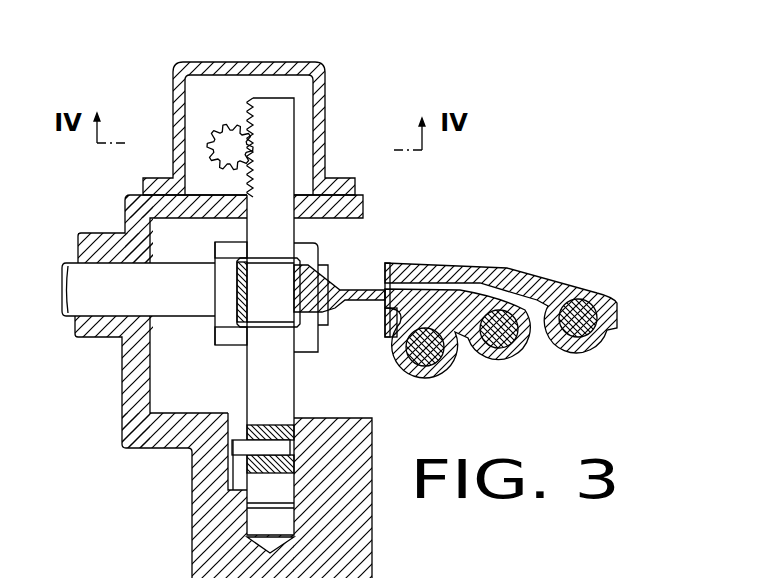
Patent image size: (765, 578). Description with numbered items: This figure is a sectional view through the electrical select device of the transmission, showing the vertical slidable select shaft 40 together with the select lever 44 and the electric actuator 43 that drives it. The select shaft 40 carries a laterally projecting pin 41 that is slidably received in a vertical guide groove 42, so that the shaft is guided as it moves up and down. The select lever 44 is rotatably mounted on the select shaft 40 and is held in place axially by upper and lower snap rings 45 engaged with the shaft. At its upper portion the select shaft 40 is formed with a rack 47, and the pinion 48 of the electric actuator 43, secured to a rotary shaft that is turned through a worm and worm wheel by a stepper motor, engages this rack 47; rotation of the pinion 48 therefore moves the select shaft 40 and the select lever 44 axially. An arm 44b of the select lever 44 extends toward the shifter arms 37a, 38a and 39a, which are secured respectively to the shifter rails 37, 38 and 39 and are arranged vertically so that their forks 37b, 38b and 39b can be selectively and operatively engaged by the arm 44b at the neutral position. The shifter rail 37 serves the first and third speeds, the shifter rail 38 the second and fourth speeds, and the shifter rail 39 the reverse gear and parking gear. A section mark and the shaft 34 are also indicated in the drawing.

The shaft 34 is at (103, 307).
The shifter rail 37 is at (437, 362).
The shifter arm 37a is at (395, 345).
The fork 37b is at (389, 337).
The shifter rail 38 is at (497, 358).
The shifter arm 38a is at (493, 299).
The fork 38b is at (410, 300).
The shifter rail 39 is at (579, 347).
The shifter arm 39a is at (473, 267).
The fork 39b is at (387, 266).
The select shaft 40 is at (293, 393).
The pin 41 is at (228, 463).
The guide groove 42 is at (227, 440).
The electric actuator 43 is at (241, 107).
The select lever 44 is at (238, 310).
The arm 44b is at (347, 289).
The snap rings 45 is at (215, 243).
The rack 47 is at (257, 148).
The pinion 48 is at (210, 146).